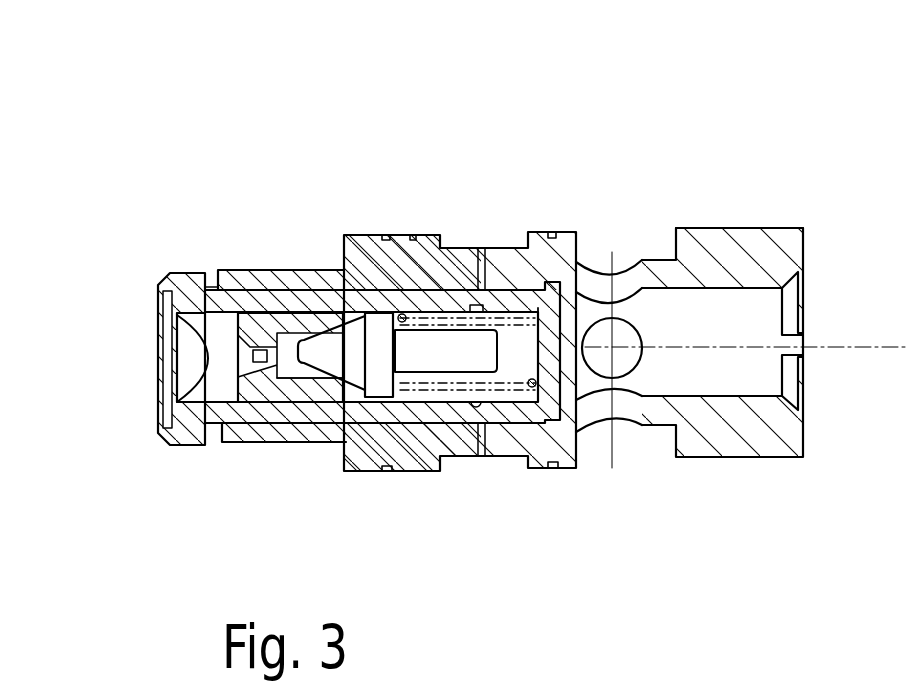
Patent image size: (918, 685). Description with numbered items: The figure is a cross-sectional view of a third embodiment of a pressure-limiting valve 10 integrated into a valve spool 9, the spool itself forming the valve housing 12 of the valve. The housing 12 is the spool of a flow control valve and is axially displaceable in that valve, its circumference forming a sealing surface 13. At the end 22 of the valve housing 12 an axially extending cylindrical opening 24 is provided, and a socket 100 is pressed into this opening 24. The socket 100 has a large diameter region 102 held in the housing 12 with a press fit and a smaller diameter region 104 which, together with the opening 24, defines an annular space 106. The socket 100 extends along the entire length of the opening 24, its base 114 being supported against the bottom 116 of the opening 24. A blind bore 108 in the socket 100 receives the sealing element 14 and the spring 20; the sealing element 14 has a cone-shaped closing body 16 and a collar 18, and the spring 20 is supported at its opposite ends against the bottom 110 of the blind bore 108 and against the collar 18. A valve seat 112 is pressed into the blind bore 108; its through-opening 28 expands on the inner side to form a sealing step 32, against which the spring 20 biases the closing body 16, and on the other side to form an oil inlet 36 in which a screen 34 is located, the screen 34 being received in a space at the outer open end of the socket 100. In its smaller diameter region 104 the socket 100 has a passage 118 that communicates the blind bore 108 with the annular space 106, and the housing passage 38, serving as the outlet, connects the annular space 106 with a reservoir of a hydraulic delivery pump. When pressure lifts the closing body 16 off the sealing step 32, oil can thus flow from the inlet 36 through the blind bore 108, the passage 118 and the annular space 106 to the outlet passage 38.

The valve spool 9 is at (762, 228).
The pressure-limiting valve 10 is at (233, 114).
The valve housing 12 is at (715, 255).
The sealing surface 13 is at (372, 232).
The sealing element 14 is at (452, 355).
The cone-shaped closing body 16 is at (335, 317).
The collar 18 is at (348, 347).
The spring 20 is at (552, 368).
The end of the valve housing 22 is at (223, 270).
The cylindrical opening 24 is at (250, 355).
The through-opening 28 is at (218, 390).
The sealing step 32 is at (290, 385).
The screen 34 is at (162, 378).
The oil inlet 36 is at (193, 445).
The passage 38 is at (483, 402).
The socket 100 is at (265, 358).
The large diameter region 102 is at (256, 305).
The smaller diameter region 104 is at (508, 280).
The annular space 106 is at (445, 275).
The blind bore 108 is at (415, 430).
The bottom of the blind bore 110 is at (590, 268).
The valve seat 112 is at (293, 317).
The base of the socket 114 is at (585, 420).
The bottom of the opening 116 is at (580, 312).
The passage of the socket 118 is at (472, 305).